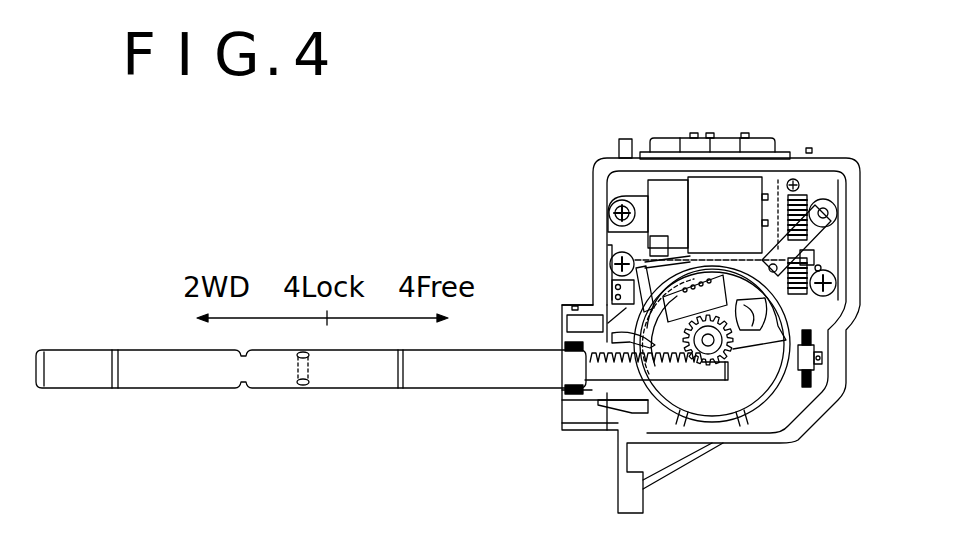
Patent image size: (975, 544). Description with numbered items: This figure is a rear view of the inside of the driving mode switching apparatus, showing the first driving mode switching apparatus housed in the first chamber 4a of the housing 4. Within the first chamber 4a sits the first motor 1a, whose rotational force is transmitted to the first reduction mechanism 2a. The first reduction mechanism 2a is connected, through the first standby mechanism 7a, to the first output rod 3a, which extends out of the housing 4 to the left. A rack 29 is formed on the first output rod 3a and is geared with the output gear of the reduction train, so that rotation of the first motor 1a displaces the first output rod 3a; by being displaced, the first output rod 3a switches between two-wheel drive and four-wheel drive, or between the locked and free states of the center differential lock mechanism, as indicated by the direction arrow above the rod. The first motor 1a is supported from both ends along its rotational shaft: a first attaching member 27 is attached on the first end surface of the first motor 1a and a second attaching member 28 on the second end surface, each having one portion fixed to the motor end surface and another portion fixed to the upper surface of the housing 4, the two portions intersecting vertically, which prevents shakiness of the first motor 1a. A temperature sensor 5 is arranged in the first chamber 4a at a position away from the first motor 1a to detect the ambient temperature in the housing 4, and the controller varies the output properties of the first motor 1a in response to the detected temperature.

The first motor 1a is at (728, 177).
The first reduction mechanism 2a is at (852, 220).
The first output rod 3a is at (480, 350).
The housing 4 is at (602, 208).
The first chamber 4a is at (603, 237).
The temperature sensor 5 is at (815, 372).
The first standby mechanism 7a is at (785, 397).
The first attaching member 27 is at (812, 190).
The second attaching member 28 is at (617, 195).
The rack 29 is at (708, 366).